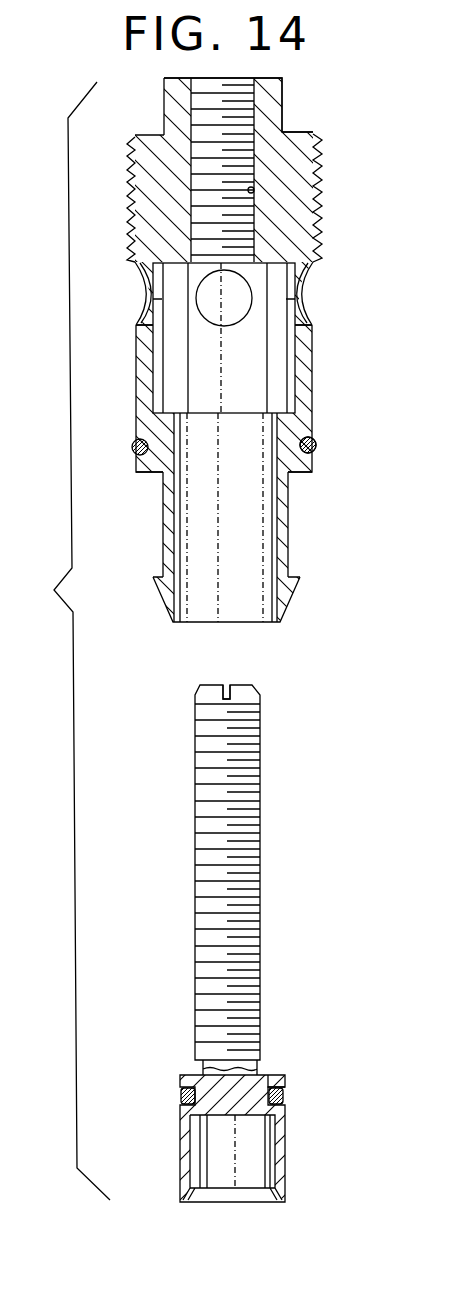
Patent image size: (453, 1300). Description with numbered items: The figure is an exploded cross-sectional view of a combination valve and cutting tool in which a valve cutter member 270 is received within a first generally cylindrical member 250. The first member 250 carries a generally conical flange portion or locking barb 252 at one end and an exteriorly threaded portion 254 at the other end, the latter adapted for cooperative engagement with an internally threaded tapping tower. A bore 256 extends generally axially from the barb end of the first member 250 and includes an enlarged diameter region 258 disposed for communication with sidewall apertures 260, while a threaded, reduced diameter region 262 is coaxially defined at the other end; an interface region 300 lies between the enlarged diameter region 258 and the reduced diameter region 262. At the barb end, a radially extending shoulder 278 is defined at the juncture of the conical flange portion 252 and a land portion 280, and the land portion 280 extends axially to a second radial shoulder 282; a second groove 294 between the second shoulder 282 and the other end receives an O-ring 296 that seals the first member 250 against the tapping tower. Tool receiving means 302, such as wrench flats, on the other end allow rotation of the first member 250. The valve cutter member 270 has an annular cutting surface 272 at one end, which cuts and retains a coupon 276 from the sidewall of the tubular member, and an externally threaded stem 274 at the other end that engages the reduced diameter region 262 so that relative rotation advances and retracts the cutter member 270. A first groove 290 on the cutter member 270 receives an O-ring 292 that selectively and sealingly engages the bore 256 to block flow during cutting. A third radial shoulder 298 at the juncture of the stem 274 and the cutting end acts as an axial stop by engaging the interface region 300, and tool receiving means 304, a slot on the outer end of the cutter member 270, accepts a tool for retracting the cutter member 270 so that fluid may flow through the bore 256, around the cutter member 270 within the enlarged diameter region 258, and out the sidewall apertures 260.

The first generally cylindrical member 250 is at (250, 350).
The conical flange portion or locking barb 252 is at (292, 593).
The exteriorly threaded portion 254 is at (320, 148).
The bore 256 is at (277, 457).
The enlarged diameter region 258 is at (297, 375).
The sidewall apertures 260 is at (142, 323).
The reduced diameter region 262 is at (257, 186).
The valve cutter member 270 is at (287, 860).
The annular cutting surface 272 is at (242, 1132).
The externally threaded stem 274 is at (243, 758).
The coupon 276 is at (230, 1192).
The radially extending shoulder 278 is at (292, 572).
The land portion 280 is at (287, 522).
The second radial shoulder 282 is at (300, 473).
The first groove 290 is at (188, 1090).
The O-ring 292 is at (284, 1092).
The second groove 294 is at (307, 433).
The O-ring 296 is at (317, 444).
The third radial shoulder 298 is at (268, 1075).
The interface region 300 is at (290, 288).
The tool receiving means 302 is at (283, 112).
The tool receiving means 304 is at (228, 685).